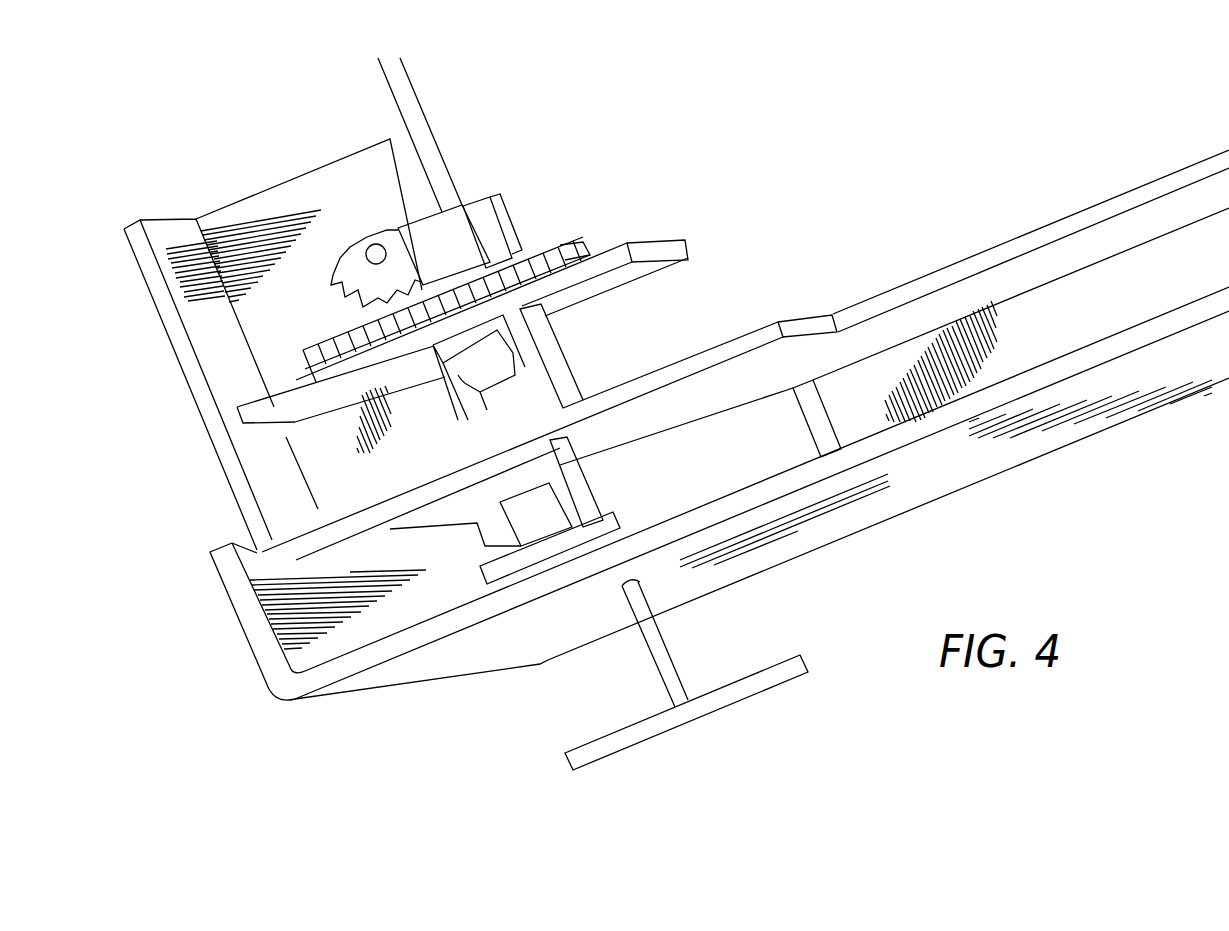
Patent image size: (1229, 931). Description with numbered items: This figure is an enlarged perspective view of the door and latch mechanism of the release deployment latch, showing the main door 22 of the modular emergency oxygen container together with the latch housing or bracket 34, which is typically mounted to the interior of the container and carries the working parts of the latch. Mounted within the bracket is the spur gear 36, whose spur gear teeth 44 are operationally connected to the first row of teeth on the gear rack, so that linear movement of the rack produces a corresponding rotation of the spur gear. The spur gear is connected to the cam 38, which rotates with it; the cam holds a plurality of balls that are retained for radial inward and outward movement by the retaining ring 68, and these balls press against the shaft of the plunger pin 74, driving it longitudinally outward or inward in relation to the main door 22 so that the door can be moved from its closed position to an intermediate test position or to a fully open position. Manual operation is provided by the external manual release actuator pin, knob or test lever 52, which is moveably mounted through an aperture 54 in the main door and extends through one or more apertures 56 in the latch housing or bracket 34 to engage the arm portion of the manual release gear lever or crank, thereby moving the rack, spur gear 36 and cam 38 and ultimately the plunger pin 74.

The main door 22 is at (450, 657).
The latch housing or bracket 34 is at (660, 252).
The spur gear 36 is at (445, 240).
The cam 38 is at (447, 402).
The spur gear teeth 44 is at (482, 277).
The external manual release actuator pin, knob or test lever 52 is at (508, 250).
The aperture 54 is at (622, 585).
The apertures 56 is at (550, 442).
The retaining ring 68 is at (497, 427).
The plunger pin 74 is at (497, 347).